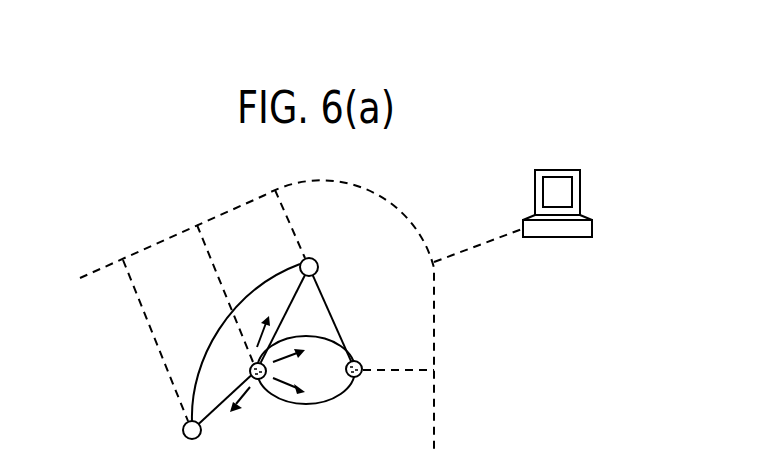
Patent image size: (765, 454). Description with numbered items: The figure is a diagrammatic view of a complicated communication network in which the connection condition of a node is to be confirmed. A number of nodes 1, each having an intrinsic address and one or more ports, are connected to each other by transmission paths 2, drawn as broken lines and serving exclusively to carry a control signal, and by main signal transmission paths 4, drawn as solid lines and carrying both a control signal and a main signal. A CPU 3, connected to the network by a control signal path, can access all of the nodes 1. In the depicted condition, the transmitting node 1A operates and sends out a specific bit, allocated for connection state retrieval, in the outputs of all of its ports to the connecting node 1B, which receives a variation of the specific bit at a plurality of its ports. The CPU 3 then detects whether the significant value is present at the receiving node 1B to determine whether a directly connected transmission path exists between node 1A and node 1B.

The node 1 is at (317, 264).
The node 1A is at (243, 362).
The node 1B is at (370, 356).
The transmission path 2 is at (436, 353).
The CPU 3 is at (553, 170).
The main signal transmission path 4 is at (294, 300).